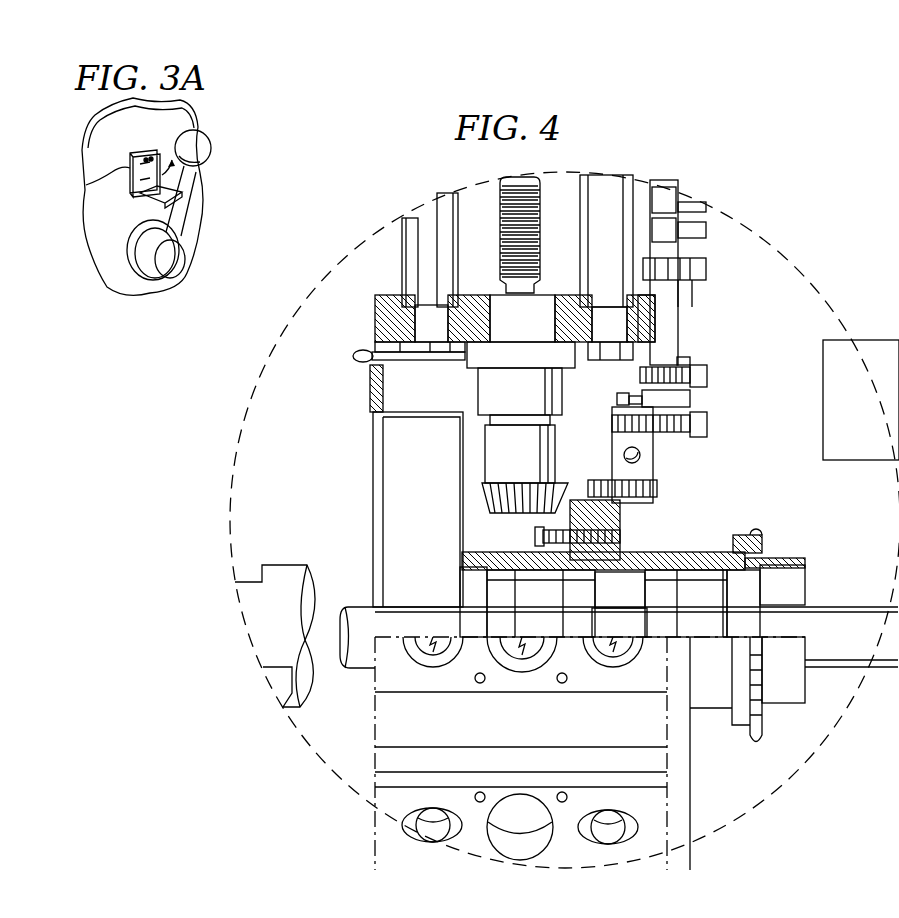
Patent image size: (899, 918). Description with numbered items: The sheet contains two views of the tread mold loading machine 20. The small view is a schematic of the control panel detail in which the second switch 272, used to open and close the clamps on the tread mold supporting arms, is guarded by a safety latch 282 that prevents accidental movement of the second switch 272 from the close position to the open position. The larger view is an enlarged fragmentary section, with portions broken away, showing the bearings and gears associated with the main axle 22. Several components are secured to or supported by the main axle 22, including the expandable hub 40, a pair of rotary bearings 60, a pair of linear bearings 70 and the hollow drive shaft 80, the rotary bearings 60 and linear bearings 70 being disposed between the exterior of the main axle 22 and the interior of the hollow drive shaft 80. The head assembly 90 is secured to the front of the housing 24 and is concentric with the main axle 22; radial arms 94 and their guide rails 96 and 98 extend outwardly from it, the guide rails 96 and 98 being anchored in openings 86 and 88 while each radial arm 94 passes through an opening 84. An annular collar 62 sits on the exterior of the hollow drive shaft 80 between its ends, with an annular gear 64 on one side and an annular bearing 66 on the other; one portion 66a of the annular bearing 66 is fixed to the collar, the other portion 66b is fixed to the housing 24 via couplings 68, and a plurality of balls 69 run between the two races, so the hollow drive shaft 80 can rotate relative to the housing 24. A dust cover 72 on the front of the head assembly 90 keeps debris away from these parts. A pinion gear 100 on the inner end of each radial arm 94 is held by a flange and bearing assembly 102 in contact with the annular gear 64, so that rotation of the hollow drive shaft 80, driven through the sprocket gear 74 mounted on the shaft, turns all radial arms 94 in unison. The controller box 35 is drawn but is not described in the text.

In FIG. 3A, the second switch 272 is at (170, 250).
In FIG. 3A, the safety latch 282 is at (132, 188).
In FIG. 4, the tread mold loading machine 20 is at (266, 428).
In FIG. 4, the main axle 22 is at (347, 606).
In FIG. 4, the housing 24 is at (690, 295).
In FIG. 4, the controller 35 is at (823, 392).
In FIG. 4, the expandable hub 40 is at (288, 572).
In FIG. 4, the rotary bearings 60 is at (607, 603).
In FIG. 4, the annular collar 62 is at (617, 520).
In FIG. 4, the annular gear 64 is at (548, 518).
In FIG. 4, the annular bearing 66 is at (647, 460).
In FIG. 4, the bearing portion 66a is at (652, 500).
In FIG. 4, the bearing portion 66b is at (654, 447).
In FIG. 4, the couplings 68 is at (684, 353).
In FIG. 4, the balls 69 is at (624, 454).
In FIG. 4, the linear bearings 70 is at (487, 596).
In FIG. 4, the dust cover 72 is at (462, 445).
In FIG. 4, the sprocket gear 74 is at (762, 712).
In FIG. 4, the hollow drive shaft 80 is at (722, 552).
In FIG. 4, the openings 84 is at (496, 302).
In FIG. 4, the openings 86 is at (420, 308).
In FIG. 4, the openings 88 is at (608, 832).
In FIG. 4, the head assembly 90 is at (366, 375).
In FIG. 4, the radial arms 94 is at (505, 195).
In FIG. 4, the guide rails 96 is at (420, 217).
In FIG. 4, the guide rails 98 is at (604, 190).
In FIG. 4, the pinion gears 100 is at (520, 492).
In FIG. 4, the flange and bearing assembly 102 is at (485, 393).